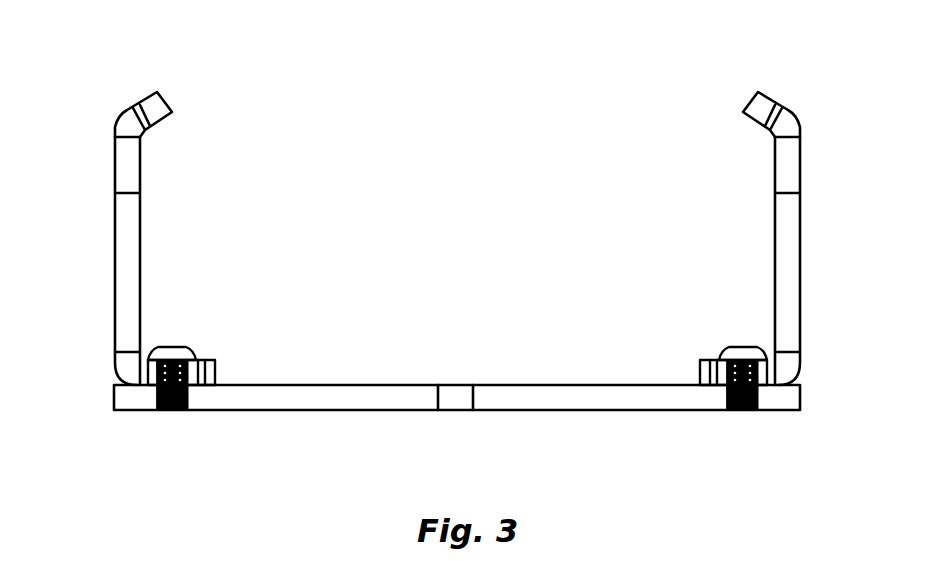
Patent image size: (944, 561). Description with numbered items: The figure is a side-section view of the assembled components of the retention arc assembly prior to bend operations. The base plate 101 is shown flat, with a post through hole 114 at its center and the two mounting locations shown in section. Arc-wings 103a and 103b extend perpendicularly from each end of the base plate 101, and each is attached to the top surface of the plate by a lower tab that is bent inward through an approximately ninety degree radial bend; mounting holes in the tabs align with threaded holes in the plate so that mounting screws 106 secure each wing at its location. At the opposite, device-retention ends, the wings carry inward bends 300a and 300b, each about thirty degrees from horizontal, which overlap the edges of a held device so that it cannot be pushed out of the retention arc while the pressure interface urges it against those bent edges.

The base plate 101 is at (403, 383).
The post through hole 114 is at (473, 392).
The arc-wing 103a is at (142, 255).
The arc-wing 103b is at (775, 260).
The inward bend 300a is at (118, 118).
The inward bend 300b is at (797, 122).
The mounting screws 106 is at (743, 345).